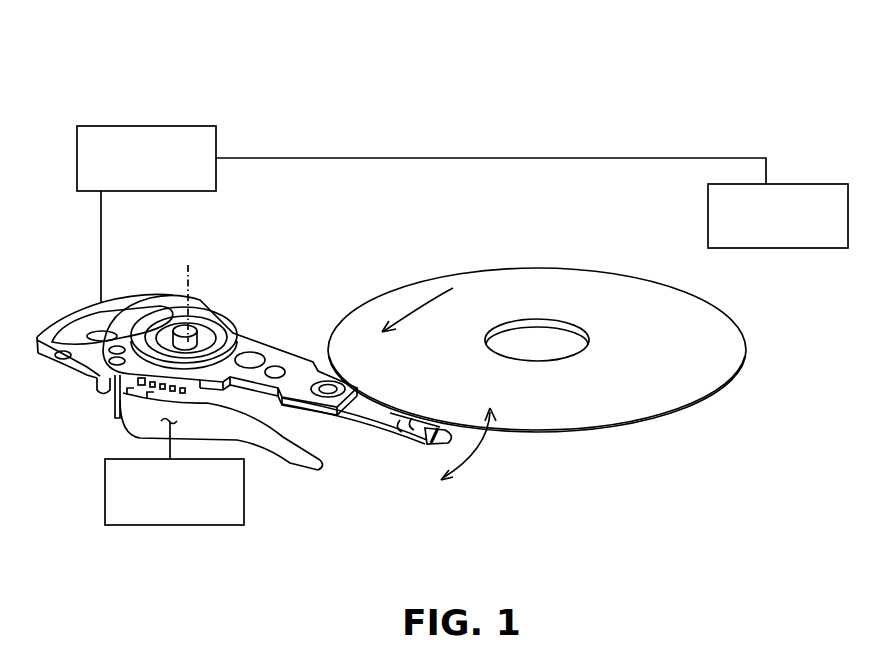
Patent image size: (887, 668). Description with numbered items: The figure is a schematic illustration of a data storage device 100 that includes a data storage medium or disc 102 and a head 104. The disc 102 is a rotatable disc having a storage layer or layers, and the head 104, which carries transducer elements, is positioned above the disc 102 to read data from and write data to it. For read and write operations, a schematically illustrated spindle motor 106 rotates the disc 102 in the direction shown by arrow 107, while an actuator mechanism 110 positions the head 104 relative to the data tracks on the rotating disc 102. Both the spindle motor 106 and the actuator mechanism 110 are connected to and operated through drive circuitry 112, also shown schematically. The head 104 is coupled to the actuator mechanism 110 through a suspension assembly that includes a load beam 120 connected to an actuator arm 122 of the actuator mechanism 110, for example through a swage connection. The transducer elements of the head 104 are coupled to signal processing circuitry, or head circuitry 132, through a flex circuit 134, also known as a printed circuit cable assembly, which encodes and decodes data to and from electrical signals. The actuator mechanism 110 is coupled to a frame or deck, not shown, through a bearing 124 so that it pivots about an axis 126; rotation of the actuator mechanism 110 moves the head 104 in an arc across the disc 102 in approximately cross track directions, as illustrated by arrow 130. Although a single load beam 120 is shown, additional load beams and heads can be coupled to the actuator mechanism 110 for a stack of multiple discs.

The data storage device 100 is at (708, 56).
The data storage medium or disc 102 is at (698, 305).
The head 104 is at (438, 444).
The spindle motor 106 is at (813, 184).
The arrow 107 is at (407, 313).
The actuator mechanism 110 is at (240, 301).
The drive circuitry 112 is at (187, 126).
The load beam 120 is at (370, 410).
The actuator arm 122 is at (297, 346).
The bearing 124 is at (182, 332).
The axis 126 is at (192, 276).
The arrow 130 is at (477, 453).
The head circuitry 132 is at (105, 494).
The flex circuit 134 is at (250, 431).